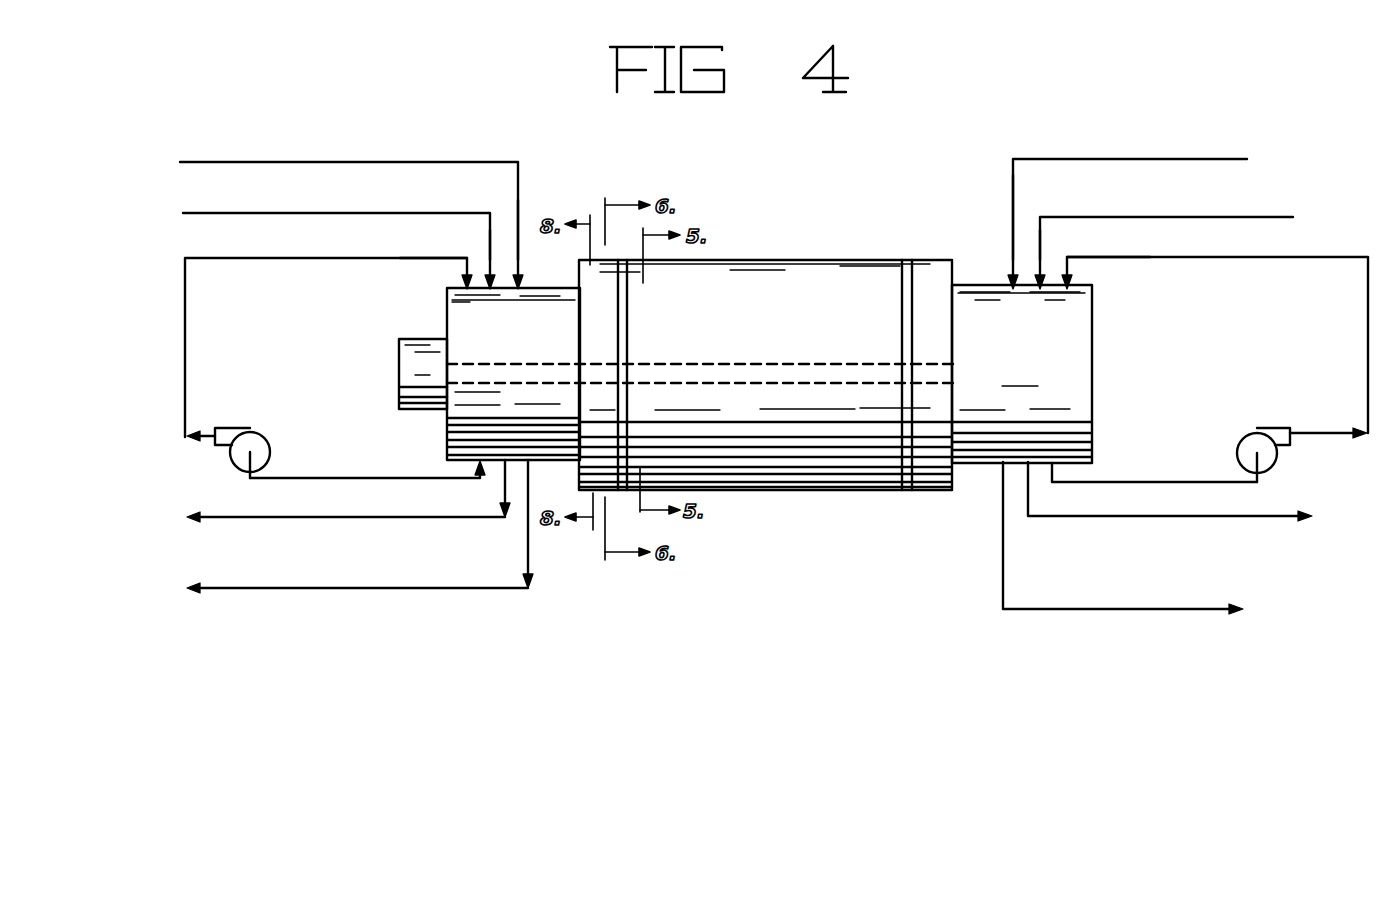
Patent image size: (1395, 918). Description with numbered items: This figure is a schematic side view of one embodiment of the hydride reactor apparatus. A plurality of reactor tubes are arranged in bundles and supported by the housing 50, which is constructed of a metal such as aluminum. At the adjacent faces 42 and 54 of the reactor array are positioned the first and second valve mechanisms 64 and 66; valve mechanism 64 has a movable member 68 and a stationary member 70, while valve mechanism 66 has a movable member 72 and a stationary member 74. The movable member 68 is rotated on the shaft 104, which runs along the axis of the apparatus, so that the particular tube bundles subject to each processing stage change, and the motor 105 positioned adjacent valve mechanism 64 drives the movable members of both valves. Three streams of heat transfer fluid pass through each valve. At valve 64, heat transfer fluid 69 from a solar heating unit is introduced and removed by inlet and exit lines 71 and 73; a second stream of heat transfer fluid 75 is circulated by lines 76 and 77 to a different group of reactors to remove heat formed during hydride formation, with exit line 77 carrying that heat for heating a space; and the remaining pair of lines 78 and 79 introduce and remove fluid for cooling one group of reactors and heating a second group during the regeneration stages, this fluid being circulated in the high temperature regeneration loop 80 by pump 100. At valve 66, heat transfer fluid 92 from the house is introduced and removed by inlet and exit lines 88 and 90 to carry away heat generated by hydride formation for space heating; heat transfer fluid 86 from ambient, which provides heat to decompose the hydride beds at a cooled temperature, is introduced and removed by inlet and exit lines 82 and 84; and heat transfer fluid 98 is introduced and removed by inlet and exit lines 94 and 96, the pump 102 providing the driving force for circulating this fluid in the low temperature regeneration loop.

The face 42 is at (616, 308).
The housing 50 is at (792, 250).
The face 54 is at (915, 300).
The first valve mechanism 64 is at (563, 281).
The second valve mechanism 66 is at (962, 281).
The movable member 68 is at (580, 345).
The heat transfer fluid 69 is at (405, 163).
The stationary member 70 is at (457, 314).
The inlet line 71 is at (518, 187).
The movable member 72 is at (937, 340).
The exit line 73 is at (415, 588).
The stationary member 74 is at (1020, 376).
The heat transfer fluid 75 is at (217, 213).
The inlet line 76 is at (490, 257).
The exit line 77 is at (460, 517).
The inlet line 78 is at (466, 262).
The exit line 79 is at (376, 478).
The high temperature regeneration loop 80 is at (188, 305).
The inlet line 82 is at (1011, 192).
The exit line 84 is at (1000, 562).
The heat transfer fluid 86 is at (1225, 158).
The inlet line 88 is at (1040, 249).
The exit line 90 is at (1060, 517).
The heat transfer fluid 92 is at (1272, 216).
The inlet line 94 is at (1085, 262).
The exit line 96 is at (1157, 481).
The heat transfer fluid 98 is at (1368, 302).
The pump 100 is at (268, 441).
The pump 102 is at (1250, 447).
The shaft 104 is at (753, 369).
The motor 105 is at (413, 353).